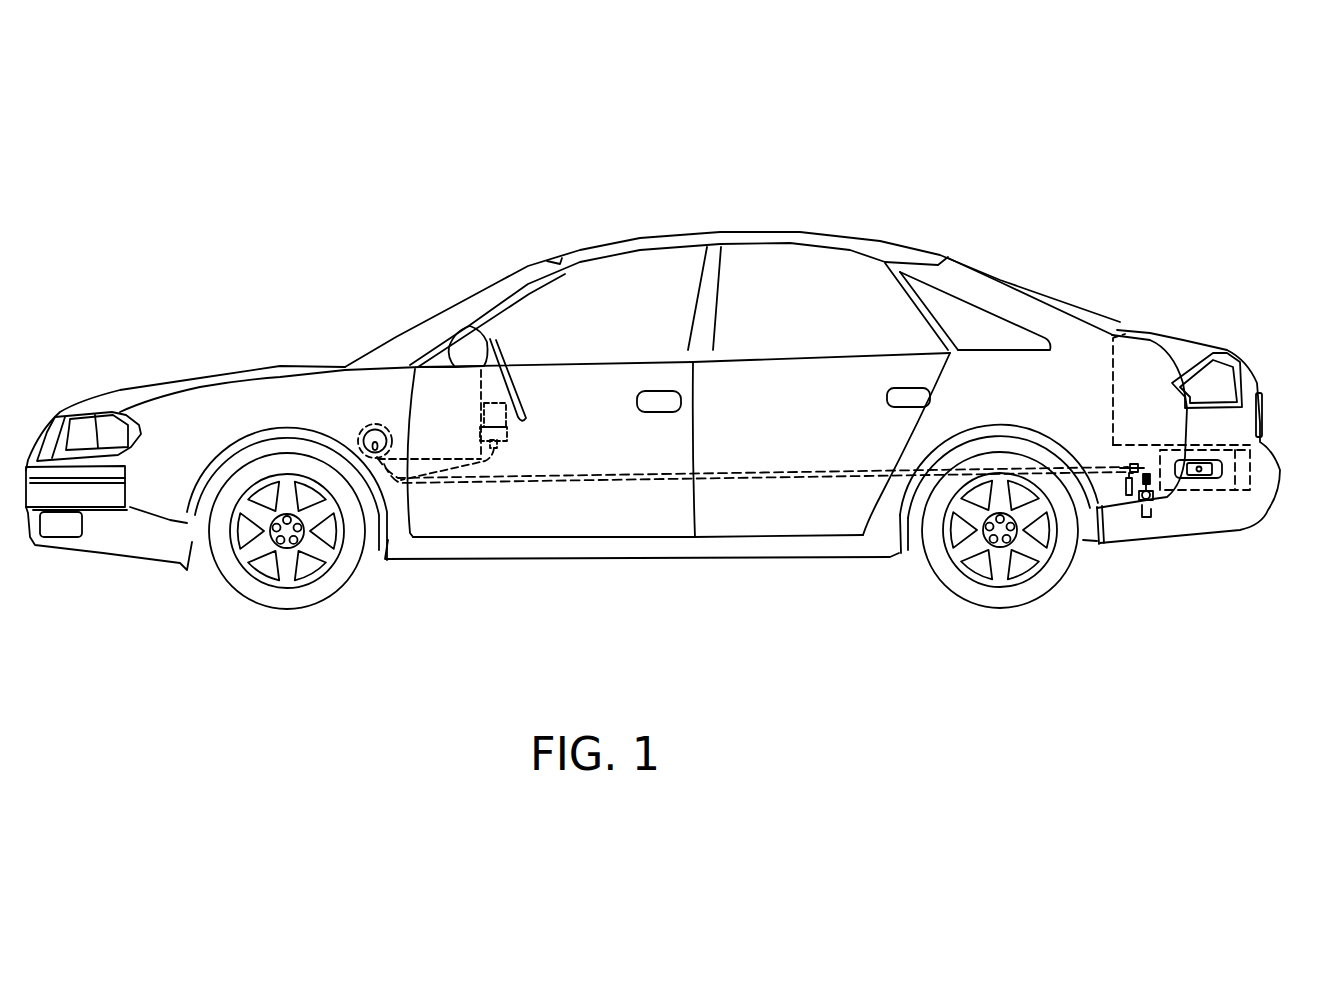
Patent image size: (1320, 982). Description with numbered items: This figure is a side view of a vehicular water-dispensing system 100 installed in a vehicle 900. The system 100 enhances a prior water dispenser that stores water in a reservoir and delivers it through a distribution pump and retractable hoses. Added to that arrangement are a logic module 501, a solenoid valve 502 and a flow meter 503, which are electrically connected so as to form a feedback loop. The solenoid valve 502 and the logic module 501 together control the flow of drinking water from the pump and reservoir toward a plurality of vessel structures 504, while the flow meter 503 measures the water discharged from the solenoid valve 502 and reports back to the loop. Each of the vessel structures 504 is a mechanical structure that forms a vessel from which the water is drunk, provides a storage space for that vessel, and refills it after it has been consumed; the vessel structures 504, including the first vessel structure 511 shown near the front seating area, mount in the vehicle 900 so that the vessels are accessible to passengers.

The vehicular water-dispensing system 100 is at (292, 177).
The vehicle 900 is at (1050, 335).
The plurality of vessel structures 504 is at (375, 423).
The first vessel structure 511 is at (500, 417).
The flow meter 503 is at (1147, 475).
The logic module 501 is at (1126, 491).
The solenoid valve 502 is at (1151, 511).